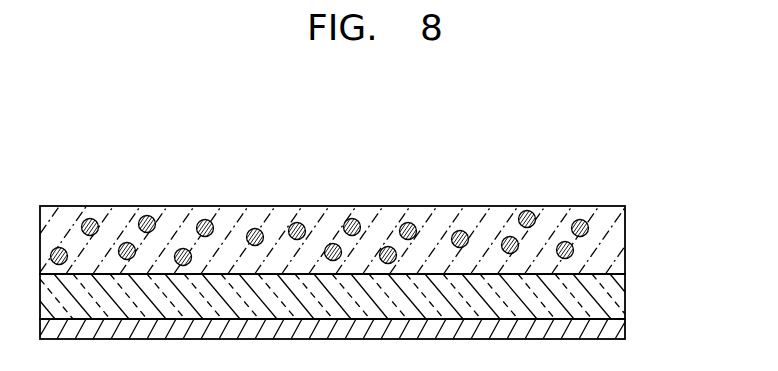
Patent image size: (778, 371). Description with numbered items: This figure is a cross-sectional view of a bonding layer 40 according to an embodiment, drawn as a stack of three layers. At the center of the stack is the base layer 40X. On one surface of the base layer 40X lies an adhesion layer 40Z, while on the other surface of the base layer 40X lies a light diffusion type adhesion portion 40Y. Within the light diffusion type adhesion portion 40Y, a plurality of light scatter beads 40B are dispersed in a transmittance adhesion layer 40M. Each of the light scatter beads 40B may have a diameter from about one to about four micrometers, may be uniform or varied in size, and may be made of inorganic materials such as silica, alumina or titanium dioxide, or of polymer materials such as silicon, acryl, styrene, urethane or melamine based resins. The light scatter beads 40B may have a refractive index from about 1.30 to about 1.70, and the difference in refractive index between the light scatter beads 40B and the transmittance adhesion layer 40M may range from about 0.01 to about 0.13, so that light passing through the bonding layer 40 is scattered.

The bonding layer 40 is at (603, 158).
The light scatter beads 40B is at (353, 218).
The transmittance adhesion layer 40M is at (438, 217).
The light diffusion type adhesion portion 40Y is at (627, 242).
The base layer 40X is at (625, 297).
The adhesion layer 40Z is at (625, 333).